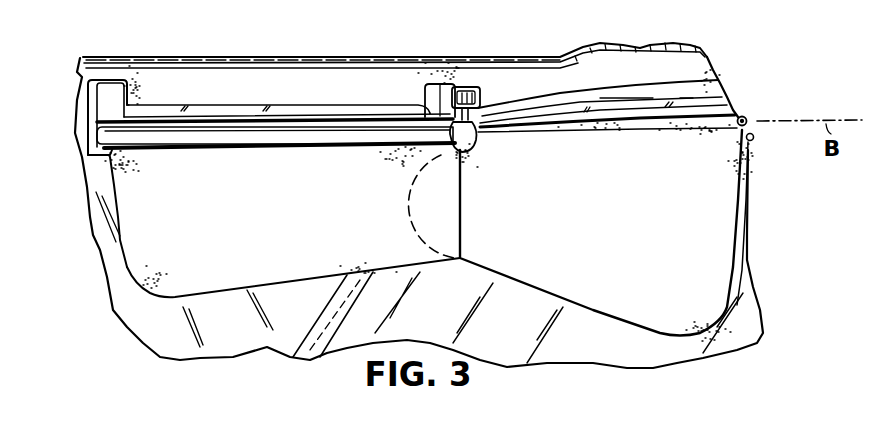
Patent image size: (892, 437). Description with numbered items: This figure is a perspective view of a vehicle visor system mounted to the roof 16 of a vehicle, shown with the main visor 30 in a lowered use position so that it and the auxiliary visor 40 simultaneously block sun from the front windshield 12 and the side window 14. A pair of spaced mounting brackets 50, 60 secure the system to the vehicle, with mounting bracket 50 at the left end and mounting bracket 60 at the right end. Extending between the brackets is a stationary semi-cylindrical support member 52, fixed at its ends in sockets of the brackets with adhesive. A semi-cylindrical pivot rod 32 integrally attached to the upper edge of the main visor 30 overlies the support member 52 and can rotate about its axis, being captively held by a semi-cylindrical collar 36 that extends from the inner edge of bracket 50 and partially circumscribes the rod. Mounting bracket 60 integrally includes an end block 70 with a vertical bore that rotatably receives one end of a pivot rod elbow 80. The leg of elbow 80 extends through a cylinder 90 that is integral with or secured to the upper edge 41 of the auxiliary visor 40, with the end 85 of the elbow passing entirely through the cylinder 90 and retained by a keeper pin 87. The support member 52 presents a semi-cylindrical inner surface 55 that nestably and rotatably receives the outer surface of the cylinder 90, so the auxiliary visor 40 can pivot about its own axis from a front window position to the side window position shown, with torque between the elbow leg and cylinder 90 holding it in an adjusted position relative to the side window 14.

The front windshield 12 is at (218, 325).
The side window 14 is at (593, 344).
The roof 16 is at (405, 57).
The main visor 30 is at (166, 288).
The semi-cylindrical pivot rod 32 is at (193, 110).
The semi-cylindrical collar 36 is at (116, 155).
The auxiliary visor 40 is at (717, 206).
The upper edge 41 is at (644, 132).
The mounting bracket 50 is at (85, 113).
The semi-cylindrical support member 52 is at (110, 155).
The semi-cylindrical inner surface 55 is at (311, 130).
The mounting bracket 60 is at (447, 86).
The end block 70 is at (481, 100).
The pivot rod elbow 80 is at (474, 117).
The end of elbow 85 is at (752, 118).
The keeper pin 87 is at (753, 141).
The cylinder 90 is at (588, 124).